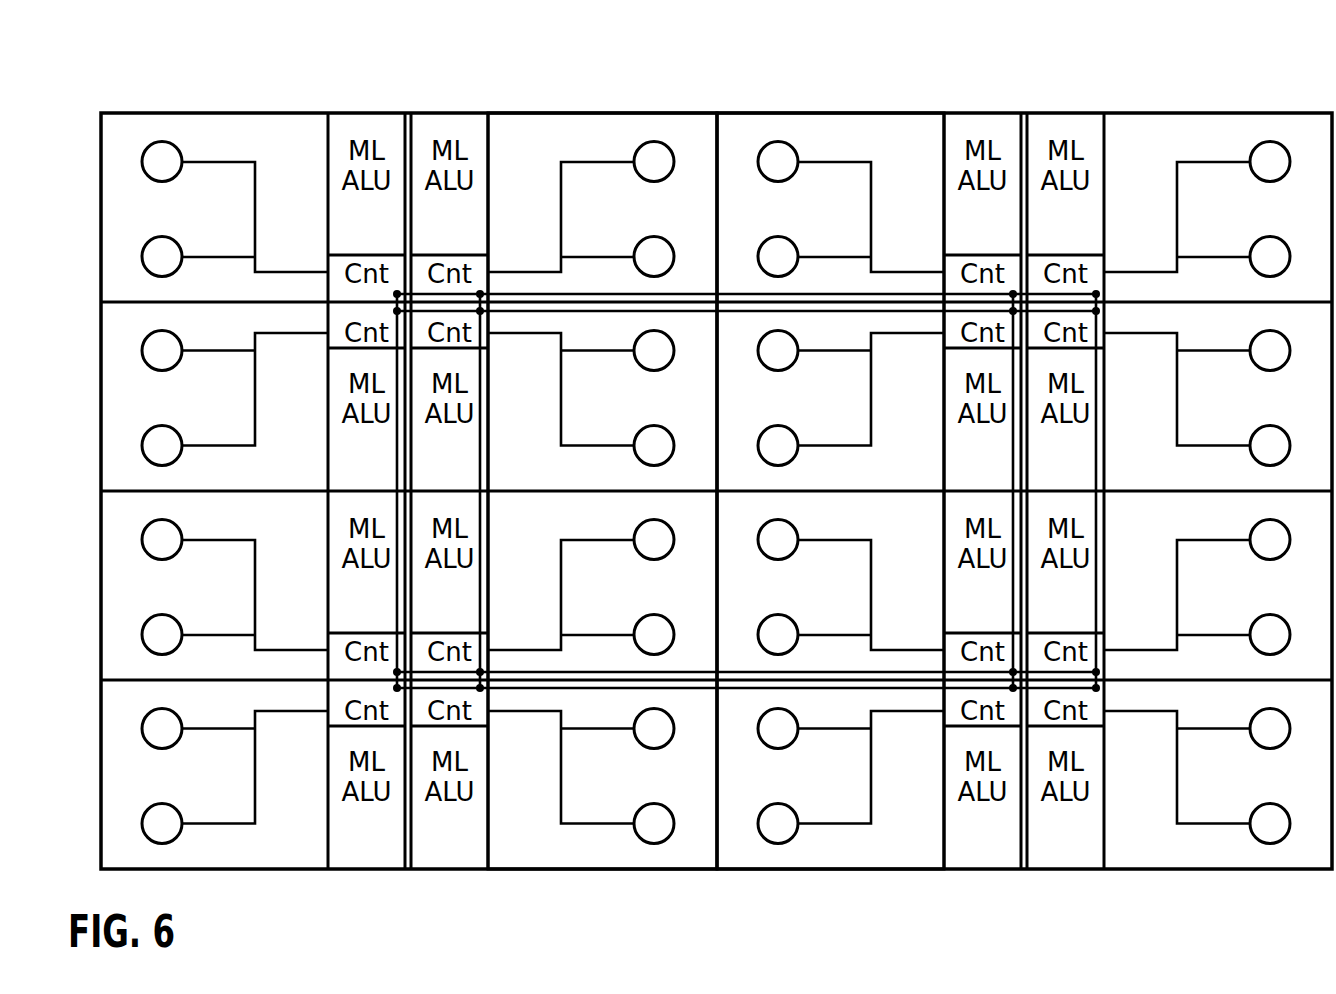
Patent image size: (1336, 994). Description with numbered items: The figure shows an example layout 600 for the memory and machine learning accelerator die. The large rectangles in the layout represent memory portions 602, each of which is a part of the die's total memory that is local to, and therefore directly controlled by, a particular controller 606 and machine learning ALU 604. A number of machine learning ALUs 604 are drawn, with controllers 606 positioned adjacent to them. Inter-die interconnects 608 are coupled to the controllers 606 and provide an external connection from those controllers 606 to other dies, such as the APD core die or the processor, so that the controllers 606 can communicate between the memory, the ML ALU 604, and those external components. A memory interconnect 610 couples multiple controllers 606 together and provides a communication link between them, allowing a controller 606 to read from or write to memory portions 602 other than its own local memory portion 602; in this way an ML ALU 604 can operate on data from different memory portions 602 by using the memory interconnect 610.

The layout 600 is at (223, 90).
The memory portion 602 is at (882, 72).
The machine learning arithmetic logic unit 604 is at (716, 491).
The controller 606 is at (716, 493).
The inter-die interconnect 608 is at (668, 741).
The memory interconnect 610 is at (731, 689).